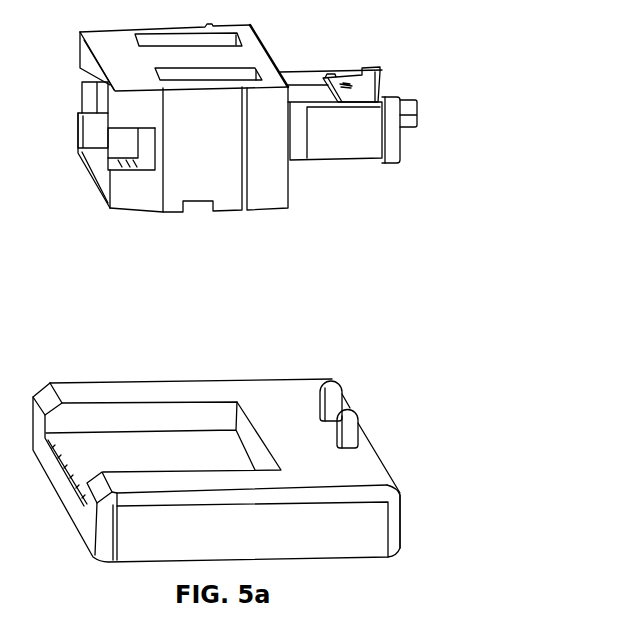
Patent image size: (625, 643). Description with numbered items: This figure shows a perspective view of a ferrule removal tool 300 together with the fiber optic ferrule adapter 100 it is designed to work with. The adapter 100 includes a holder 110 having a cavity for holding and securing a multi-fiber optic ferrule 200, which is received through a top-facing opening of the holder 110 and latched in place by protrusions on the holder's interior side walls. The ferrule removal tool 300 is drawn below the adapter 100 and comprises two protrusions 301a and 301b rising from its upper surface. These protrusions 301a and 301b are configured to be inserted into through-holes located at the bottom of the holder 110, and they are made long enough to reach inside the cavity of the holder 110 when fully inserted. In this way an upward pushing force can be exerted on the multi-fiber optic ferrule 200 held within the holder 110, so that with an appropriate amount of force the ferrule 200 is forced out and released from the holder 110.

The fiber optic ferrule adapter 100 is at (237, 217).
The holder 110 is at (358, 145).
The multi-fiber optic ferrule 200 is at (363, 80).
The ferrule removal tool 300 is at (148, 358).
The protrusion 301a is at (337, 383).
The protrusion 301b is at (358, 412).